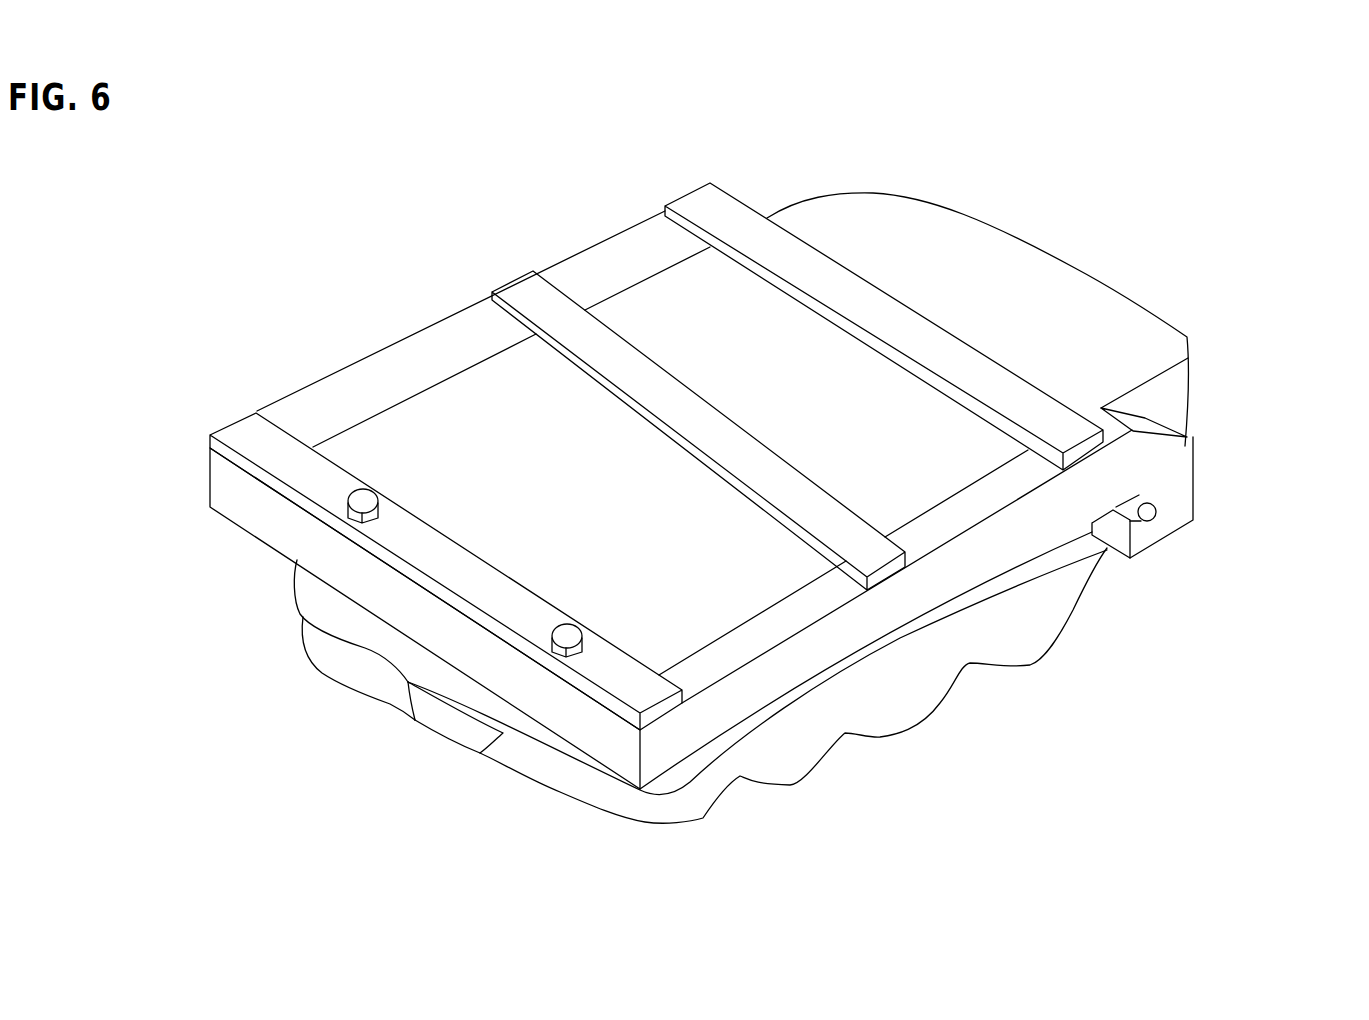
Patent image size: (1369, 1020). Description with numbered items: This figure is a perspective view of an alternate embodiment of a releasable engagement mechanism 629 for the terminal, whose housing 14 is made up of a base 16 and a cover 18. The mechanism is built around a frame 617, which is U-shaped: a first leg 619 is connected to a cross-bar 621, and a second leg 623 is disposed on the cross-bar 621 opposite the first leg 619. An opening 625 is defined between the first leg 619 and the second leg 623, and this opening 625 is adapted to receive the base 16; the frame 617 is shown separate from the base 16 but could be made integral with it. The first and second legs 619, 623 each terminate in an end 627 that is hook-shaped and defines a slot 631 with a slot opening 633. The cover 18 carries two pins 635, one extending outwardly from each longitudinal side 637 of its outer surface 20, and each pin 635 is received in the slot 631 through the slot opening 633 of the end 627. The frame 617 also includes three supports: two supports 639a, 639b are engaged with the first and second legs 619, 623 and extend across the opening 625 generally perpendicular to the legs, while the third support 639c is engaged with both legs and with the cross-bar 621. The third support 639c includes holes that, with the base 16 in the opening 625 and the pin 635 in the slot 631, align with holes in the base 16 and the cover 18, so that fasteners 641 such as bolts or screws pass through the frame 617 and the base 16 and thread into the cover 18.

The housing 14 is at (395, 305).
The base 16 is at (1023, 260).
The cover 18 is at (636, 818).
The outer surface 20 is at (887, 742).
The frame 617 is at (773, 187).
The first leg 619 is at (866, 635).
The cross-bar 621 is at (318, 535).
The second leg 623 is at (467, 322).
The opening 625 is at (638, 284).
The end 627 is at (1155, 540).
The releasable engagement mechanism 629 is at (1197, 418).
The slot 631 is at (1148, 488).
The slot opening 633 is at (1130, 517).
The pin 635 is at (1153, 512).
The longitudinal side 637 is at (990, 588).
The support 639a is at (848, 286).
The support 639b is at (678, 396).
The third support 639c is at (478, 580).
The fastener 641 is at (366, 500).